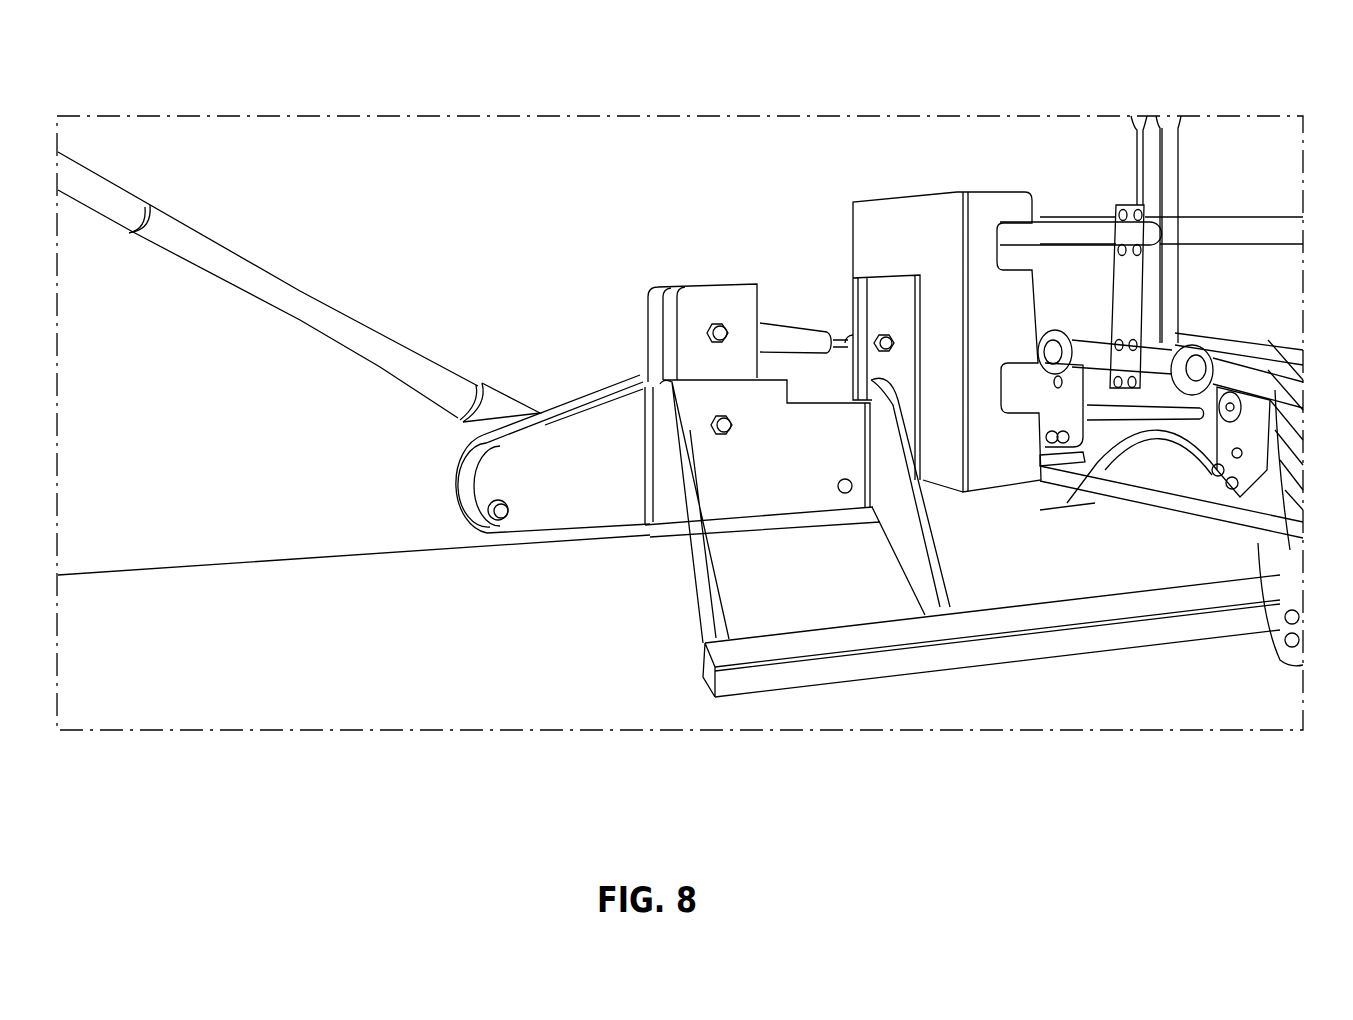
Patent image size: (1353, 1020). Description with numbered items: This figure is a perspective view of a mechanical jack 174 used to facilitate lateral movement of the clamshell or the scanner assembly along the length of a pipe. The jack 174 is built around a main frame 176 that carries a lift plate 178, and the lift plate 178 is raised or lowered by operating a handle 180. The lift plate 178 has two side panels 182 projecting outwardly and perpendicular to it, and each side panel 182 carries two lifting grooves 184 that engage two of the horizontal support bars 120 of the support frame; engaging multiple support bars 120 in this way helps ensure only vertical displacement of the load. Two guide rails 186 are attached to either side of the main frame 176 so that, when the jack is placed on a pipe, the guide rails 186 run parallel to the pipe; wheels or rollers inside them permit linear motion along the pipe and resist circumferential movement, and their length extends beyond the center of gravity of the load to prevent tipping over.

The horizontal support bars 120 is at (1247, 518).
The mechanical jack 174 is at (457, 585).
The main frame 176 is at (617, 467).
The lift plate 178 is at (898, 230).
The handle 180 is at (206, 242).
The side panels 182 is at (983, 222).
The lifting grooves 184 is at (1023, 252).
The guide rails 186 is at (828, 642).